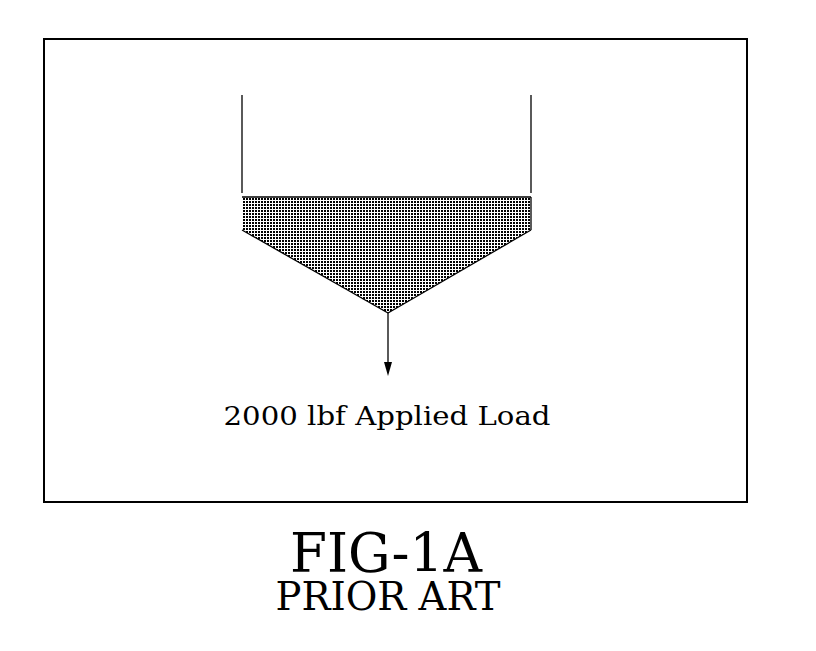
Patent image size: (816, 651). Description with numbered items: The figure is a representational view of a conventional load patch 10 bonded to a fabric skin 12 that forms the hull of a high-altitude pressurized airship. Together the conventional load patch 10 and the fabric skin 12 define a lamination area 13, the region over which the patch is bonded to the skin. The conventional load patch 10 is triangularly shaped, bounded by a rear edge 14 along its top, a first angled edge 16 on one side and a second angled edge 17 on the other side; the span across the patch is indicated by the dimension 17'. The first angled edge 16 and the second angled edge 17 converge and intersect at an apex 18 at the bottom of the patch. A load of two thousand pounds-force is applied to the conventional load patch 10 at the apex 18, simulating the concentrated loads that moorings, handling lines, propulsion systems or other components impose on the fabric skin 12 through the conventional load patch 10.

The conventional load patch 10 is at (372, 248).
The fabric skin 12 is at (664, 323).
The lamination area 13 is at (536, 235).
The rear edge 14 is at (423, 198).
The first angled edge 16 is at (315, 270).
The second angled edge 17 is at (472, 278).
The indenter width dimension 17' is at (386, 144).
The apex 18 is at (390, 316).